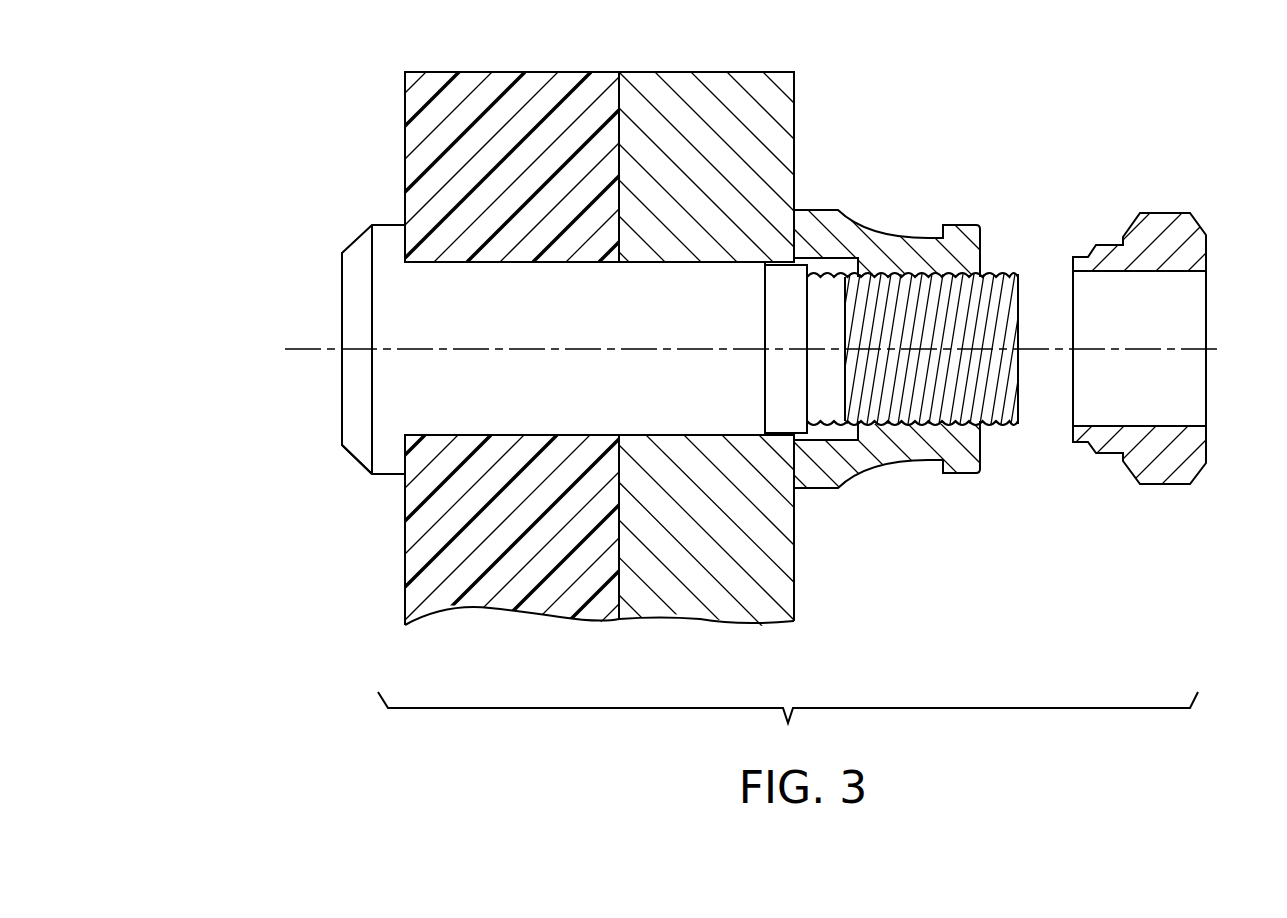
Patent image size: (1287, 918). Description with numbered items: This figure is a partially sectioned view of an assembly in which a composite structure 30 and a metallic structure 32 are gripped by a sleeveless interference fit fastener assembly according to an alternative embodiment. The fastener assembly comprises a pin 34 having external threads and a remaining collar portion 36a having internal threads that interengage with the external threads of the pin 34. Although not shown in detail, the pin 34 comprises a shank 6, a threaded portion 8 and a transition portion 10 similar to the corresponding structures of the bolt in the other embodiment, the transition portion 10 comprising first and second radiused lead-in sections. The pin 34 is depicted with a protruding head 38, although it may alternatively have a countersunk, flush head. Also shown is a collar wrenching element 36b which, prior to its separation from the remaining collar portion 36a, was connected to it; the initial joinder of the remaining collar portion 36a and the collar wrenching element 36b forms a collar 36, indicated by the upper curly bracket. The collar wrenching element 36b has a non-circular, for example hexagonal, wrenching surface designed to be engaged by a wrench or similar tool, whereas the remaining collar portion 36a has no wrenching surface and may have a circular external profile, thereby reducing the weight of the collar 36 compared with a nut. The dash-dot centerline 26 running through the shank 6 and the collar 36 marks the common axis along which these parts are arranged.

The shank 6 is at (500, 437).
The threaded portion 8 is at (1010, 271).
The transition portion 10 is at (772, 378).
The longitudinal axis 26 is at (305, 349).
The composite structure 30 is at (488, 92).
The metallic structure 32 is at (695, 102).
The pin 34 is at (365, 212).
The collar 36 is at (798, 195).
The remaining collar portion 36a is at (877, 470).
The collar wrenching element 36b is at (1175, 484).
The protruding head 38 is at (340, 422).